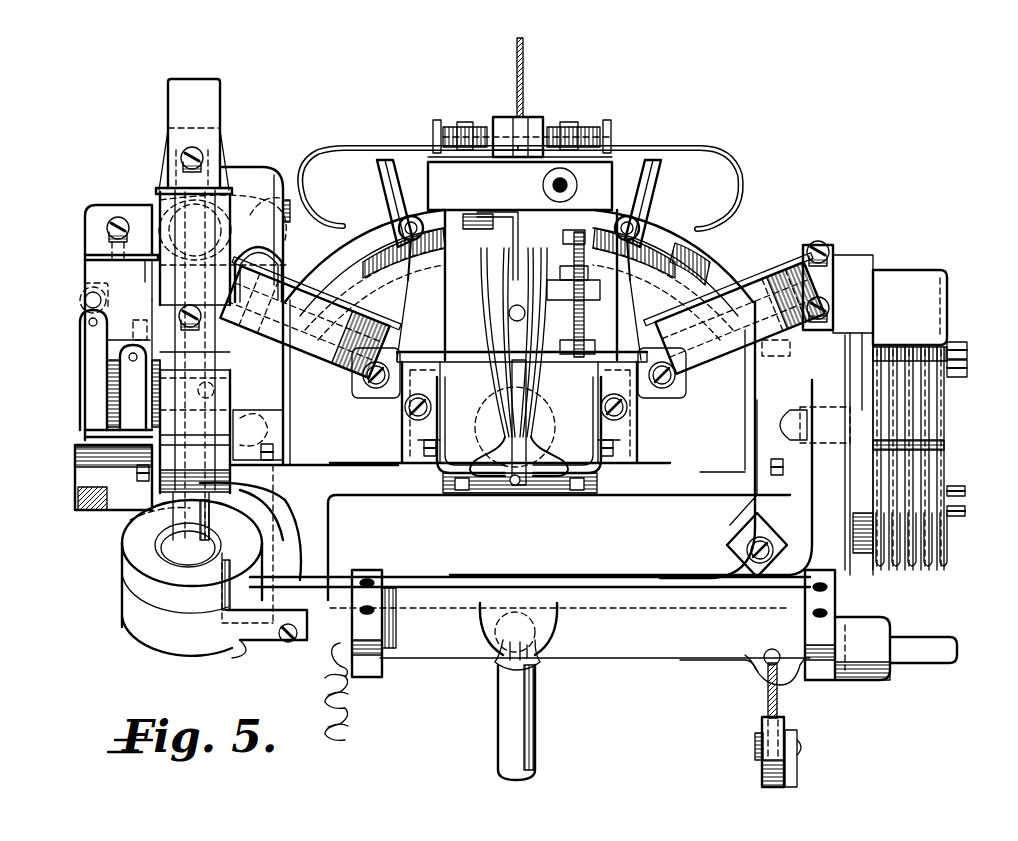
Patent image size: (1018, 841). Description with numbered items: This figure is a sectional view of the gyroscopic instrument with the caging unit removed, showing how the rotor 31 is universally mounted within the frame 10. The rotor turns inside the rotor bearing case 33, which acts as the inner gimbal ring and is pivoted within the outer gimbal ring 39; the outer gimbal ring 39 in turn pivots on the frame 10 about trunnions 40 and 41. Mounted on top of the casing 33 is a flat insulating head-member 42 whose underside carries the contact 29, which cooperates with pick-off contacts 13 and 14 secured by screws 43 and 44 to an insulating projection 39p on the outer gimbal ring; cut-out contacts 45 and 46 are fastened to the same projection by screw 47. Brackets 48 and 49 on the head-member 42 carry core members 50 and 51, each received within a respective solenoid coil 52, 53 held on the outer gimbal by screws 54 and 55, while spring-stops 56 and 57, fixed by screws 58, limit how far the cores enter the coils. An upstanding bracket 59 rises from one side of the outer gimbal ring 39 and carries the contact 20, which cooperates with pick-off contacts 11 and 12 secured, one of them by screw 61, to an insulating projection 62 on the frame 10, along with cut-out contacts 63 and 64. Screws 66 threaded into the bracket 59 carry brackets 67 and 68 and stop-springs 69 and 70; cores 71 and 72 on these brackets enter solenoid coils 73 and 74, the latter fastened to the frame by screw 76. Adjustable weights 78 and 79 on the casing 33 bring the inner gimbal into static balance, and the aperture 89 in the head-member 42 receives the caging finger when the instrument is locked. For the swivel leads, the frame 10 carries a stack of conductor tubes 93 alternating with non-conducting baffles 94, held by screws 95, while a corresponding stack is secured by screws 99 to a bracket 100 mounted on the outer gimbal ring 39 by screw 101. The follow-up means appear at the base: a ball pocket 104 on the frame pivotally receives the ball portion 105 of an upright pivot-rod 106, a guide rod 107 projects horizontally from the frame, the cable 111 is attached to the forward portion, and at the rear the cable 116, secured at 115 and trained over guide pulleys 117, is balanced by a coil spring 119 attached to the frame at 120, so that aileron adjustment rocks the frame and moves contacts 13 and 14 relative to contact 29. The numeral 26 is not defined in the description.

The frame 10 is at (652, 658).
The pick-off contact 11 is at (80, 300).
The pick-off contact 12 is at (80, 337).
The pick-off contact 13 is at (504, 252).
The pick-off contact 14 is at (546, 252).
The contact 20 is at (88, 272).
The cam rim 26 is at (135, 535).
The contact 29 is at (525, 216).
The rotor 31 is at (366, 503).
The rotor bearing case 33 is at (450, 296).
The outer gimbal ring 39 is at (725, 465).
The projection 39p is at (568, 385).
The trunnion 40 is at (800, 445).
The trunnion 41 is at (245, 442).
The head-member 42 is at (460, 166).
The screw 43 is at (432, 462).
The screw 44 is at (612, 458).
The cut-out contact 45 is at (492, 329).
The cut-out contact 46 is at (553, 326).
The screw 47 is at (515, 487).
The bracket 48 is at (372, 178).
The bracket 49 is at (668, 169).
The core member 50 is at (345, 234).
The core member 51 is at (700, 238).
The solenoid coil 52 is at (353, 327).
The solenoid coil 53 is at (678, 320).
The screw 54 is at (385, 390).
The screw 55 is at (665, 390).
The spring-stop 56 is at (333, 148).
The spring-stop 57 is at (740, 180).
The screw 58 is at (466, 130).
The upstanding bracket 59 is at (268, 176).
The screw 61 is at (89, 512).
The projection 62 is at (77, 474).
The cut-out contact 63 is at (122, 335).
The cut-out contact 64 is at (123, 376).
The screw 66 is at (192, 155).
The bracket 67 is at (162, 151).
The bracket 68 is at (158, 395).
The stop-spring 69 is at (175, 104).
The stop-spring 70 is at (173, 468).
The core 71 is at (158, 206).
The core 72 is at (178, 548).
The solenoid coil 73 is at (230, 205).
The solenoid coil 74 is at (140, 637).
The screw 76 is at (284, 648).
The adjustable weight 78 is at (535, 117).
The adjustable weight 79 is at (598, 291).
The aperture 89 is at (545, 184).
The conductor tube 93 is at (918, 543).
The non-conducting baffle 94 is at (930, 468).
The screw 95 is at (957, 510).
The screw 99 is at (970, 365).
The bracket 100 is at (912, 295).
The screw 101 is at (762, 347).
The ball pocket 104 is at (540, 637).
The ball portion 105 is at (500, 665).
The pivot-rod 106 is at (535, 740).
The guide rod 107 is at (945, 640).
The cable 111 is at (527, 58).
The cable attachment 115 is at (748, 673).
The cable 116 is at (782, 707).
The guide pulley 117 is at (760, 730).
The coil spring 119 is at (352, 712).
The spring attachment 120 is at (346, 632).